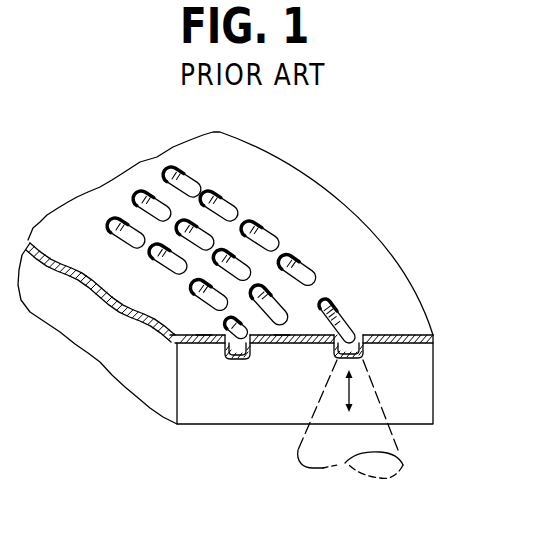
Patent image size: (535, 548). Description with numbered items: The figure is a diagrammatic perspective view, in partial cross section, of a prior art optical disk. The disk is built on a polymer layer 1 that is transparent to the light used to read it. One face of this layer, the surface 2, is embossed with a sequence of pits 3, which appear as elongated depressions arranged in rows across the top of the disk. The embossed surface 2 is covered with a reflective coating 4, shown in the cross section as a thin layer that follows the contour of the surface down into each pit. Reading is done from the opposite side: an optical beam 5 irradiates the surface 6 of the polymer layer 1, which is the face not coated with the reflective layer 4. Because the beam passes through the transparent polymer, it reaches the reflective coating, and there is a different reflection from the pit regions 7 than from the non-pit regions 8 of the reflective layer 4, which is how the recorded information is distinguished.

The polymer layer 1 is at (427, 398).
The surface 2 is at (409, 349).
The pits 3 is at (192, 186).
The reflective coating 4 is at (418, 334).
The optical beam 5 is at (403, 450).
The surface 6 is at (297, 425).
The pit regions 7 is at (338, 358).
The non-pit regions 8 is at (202, 347).